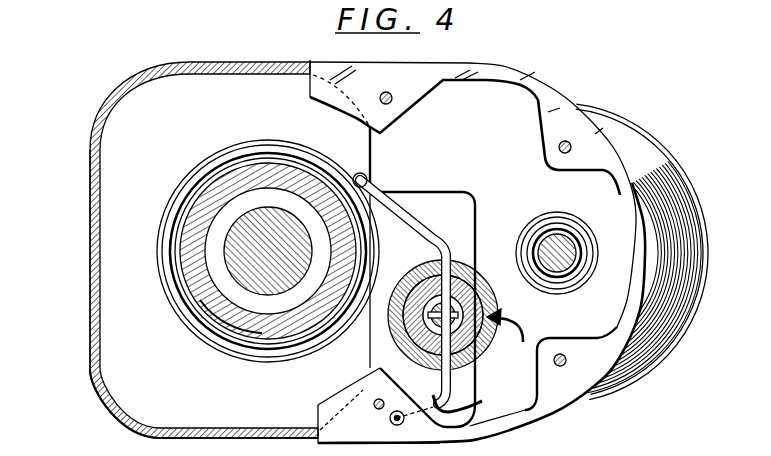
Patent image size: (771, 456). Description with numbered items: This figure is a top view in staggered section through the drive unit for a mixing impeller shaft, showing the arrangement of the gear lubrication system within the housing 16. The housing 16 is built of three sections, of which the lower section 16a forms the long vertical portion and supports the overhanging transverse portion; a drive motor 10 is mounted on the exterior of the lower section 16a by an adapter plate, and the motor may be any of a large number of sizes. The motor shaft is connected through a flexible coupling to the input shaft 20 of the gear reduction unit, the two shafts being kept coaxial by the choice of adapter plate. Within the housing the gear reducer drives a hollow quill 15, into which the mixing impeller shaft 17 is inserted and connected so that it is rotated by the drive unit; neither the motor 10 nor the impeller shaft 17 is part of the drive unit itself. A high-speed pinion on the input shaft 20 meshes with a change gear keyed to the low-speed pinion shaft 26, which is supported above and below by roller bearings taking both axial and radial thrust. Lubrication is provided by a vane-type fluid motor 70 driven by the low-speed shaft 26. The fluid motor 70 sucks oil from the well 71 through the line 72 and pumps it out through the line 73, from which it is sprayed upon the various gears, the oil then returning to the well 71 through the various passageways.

The drive motor 10 is at (640, 142).
The quill 15 is at (203, 235).
The housing 16 is at (118, 92).
The lower section 16a is at (96, 171).
The mixing impeller shaft 17 is at (241, 265).
The input shaft 20 is at (555, 240).
The low-speed pinion shaft 26 is at (452, 304).
The vane-type fluid motor 70 is at (509, 338).
The well 71 is at (262, 128).
The line 72 is at (402, 211).
The line 73 is at (474, 402).